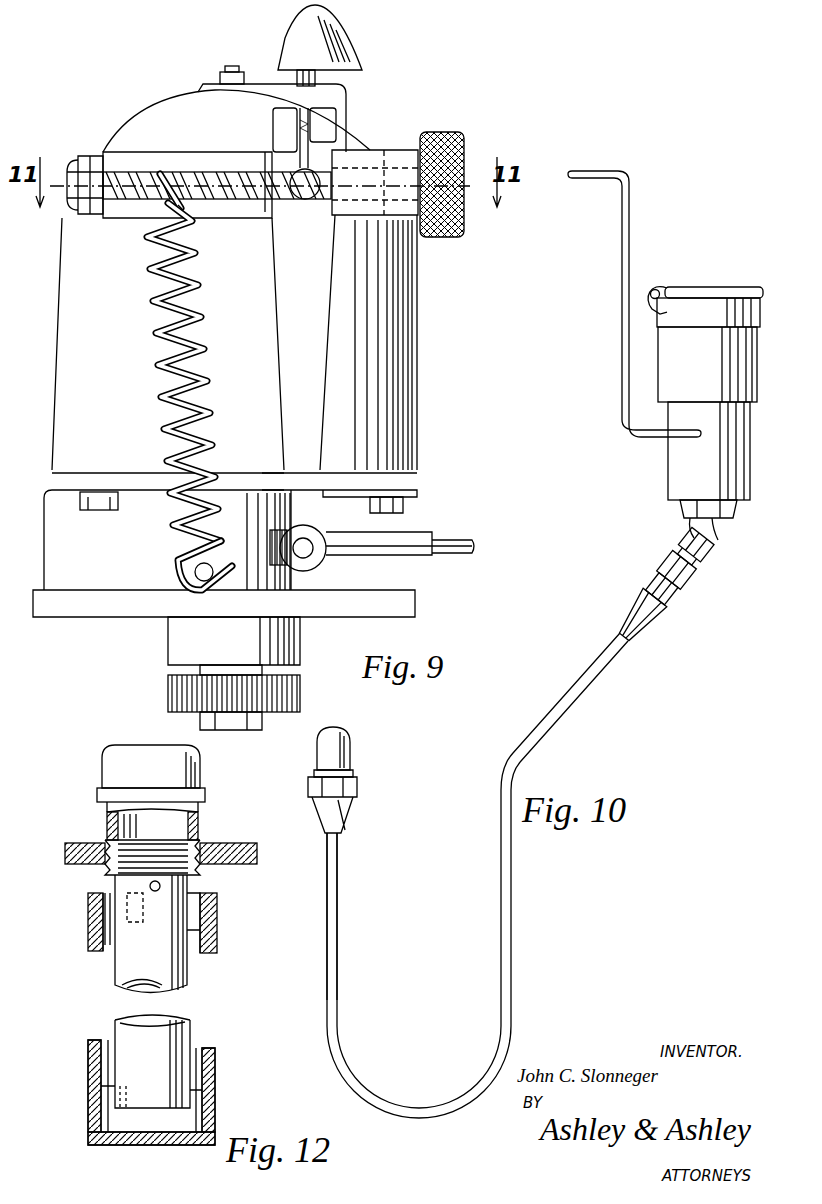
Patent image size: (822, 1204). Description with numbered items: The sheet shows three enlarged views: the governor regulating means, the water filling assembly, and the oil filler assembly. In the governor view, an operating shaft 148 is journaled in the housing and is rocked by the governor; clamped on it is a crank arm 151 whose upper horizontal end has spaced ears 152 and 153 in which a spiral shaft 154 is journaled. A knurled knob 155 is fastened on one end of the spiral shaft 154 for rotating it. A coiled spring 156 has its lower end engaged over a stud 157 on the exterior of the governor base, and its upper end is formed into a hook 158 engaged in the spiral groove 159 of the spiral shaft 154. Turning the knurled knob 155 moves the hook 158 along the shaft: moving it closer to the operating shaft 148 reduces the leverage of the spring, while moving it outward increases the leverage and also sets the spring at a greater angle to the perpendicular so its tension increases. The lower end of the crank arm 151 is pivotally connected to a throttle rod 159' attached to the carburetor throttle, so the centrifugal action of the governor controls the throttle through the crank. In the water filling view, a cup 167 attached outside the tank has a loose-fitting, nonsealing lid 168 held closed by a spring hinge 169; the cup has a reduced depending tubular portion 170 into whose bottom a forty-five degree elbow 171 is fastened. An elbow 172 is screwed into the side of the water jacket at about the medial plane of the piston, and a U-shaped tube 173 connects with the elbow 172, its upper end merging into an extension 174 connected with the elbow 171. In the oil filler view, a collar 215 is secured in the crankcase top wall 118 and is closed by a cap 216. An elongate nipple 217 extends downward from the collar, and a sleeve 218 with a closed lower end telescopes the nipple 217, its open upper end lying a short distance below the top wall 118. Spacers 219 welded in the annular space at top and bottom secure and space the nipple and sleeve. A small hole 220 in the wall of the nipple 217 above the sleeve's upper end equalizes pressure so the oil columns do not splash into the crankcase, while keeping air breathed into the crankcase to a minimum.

In FIG. 9, the operating shaft 148 is at (305, 174).
In FIG. 9, the crank arm 151 is at (282, 320).
In FIG. 9, the ear 152 is at (345, 216).
In FIG. 9, the ear 153 is at (100, 160).
In FIG. 9, the spiral shaft 154 is at (176, 168).
In FIG. 9, the knurled knob 155 is at (433, 134).
In FIG. 9, the coiled spring 156 is at (196, 286).
In FIG. 9, the stud 157 is at (192, 572).
In FIG. 9, the hook 158 is at (186, 210).
In FIG. 9, the spiral groove 159 is at (260, 161).
In FIG. 9, the throttle rod 159' is at (383, 543).
In FIG. 10, the cup 167 is at (757, 380).
In FIG. 10, the lid 168 is at (752, 283).
In FIG. 10, the spring hinge 169 is at (658, 290).
In FIG. 10, the tubular portion 170 is at (668, 462).
In FIG. 10, the elbow 171 is at (716, 545).
In FIG. 10, the elbow 172 is at (352, 768).
In FIG. 10, the U-shaped tube 173 is at (339, 872).
In FIG. 10, the extension 174 is at (588, 680).
In FIG. 12, the top wall 118 is at (86, 845).
In FIG. 12, the collar 215 is at (200, 822).
In FIG. 12, the cap 216 is at (172, 775).
In FIG. 12, the nipple 217 is at (126, 962).
In FIG. 12, the sleeve 218 is at (88, 1062).
In FIG. 12, the spacer 219 is at (200, 899).
In FIG. 12, the hole 220 is at (161, 886).